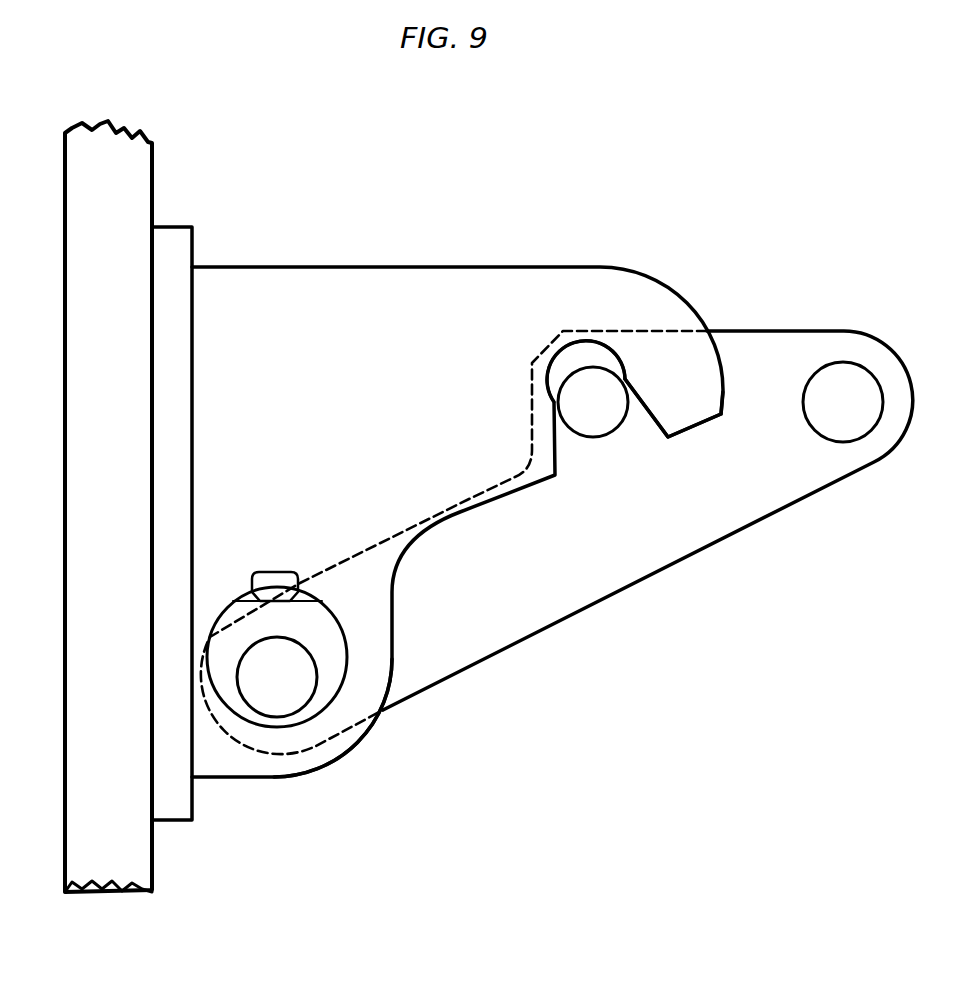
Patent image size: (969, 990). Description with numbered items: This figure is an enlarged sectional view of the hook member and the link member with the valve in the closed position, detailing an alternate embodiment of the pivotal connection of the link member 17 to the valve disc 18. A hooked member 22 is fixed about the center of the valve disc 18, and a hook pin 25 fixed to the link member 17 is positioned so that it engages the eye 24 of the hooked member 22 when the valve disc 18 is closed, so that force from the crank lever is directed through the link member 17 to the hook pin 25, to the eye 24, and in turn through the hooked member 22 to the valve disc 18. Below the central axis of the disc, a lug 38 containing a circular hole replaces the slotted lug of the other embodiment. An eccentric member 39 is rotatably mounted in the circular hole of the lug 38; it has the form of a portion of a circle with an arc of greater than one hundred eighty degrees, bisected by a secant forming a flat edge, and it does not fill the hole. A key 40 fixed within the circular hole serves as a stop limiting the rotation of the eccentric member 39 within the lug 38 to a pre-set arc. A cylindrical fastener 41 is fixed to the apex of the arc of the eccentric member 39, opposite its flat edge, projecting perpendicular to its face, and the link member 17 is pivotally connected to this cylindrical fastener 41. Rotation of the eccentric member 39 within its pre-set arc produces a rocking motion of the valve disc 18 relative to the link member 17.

The link member 17 is at (635, 585).
The valve disc 18 is at (155, 862).
The hooked member 22 is at (403, 266).
The eye 24 is at (653, 420).
The hook pin 25 is at (600, 438).
The lug 38 is at (368, 733).
The eccentric member 39 is at (313, 637).
The key 40 is at (267, 568).
The cylindrical fastener 41 is at (283, 691).